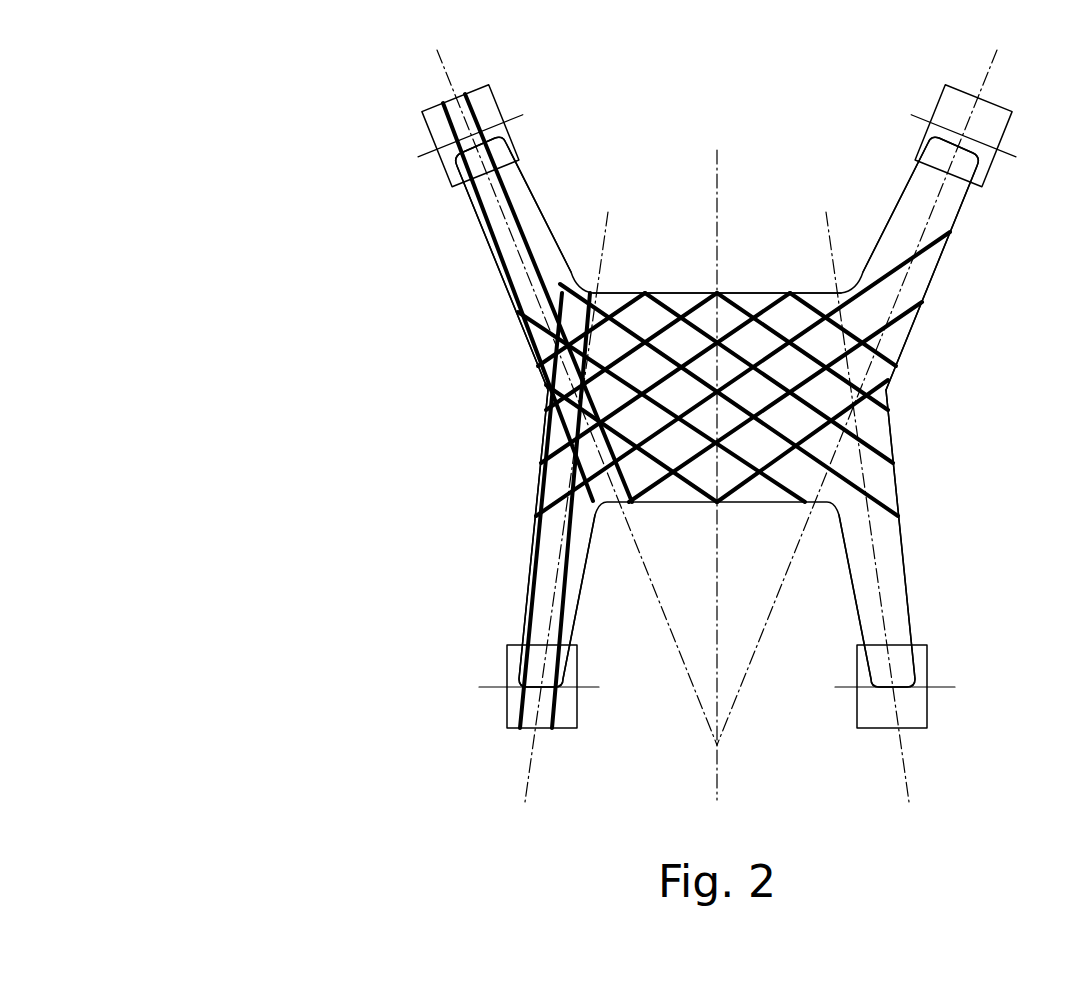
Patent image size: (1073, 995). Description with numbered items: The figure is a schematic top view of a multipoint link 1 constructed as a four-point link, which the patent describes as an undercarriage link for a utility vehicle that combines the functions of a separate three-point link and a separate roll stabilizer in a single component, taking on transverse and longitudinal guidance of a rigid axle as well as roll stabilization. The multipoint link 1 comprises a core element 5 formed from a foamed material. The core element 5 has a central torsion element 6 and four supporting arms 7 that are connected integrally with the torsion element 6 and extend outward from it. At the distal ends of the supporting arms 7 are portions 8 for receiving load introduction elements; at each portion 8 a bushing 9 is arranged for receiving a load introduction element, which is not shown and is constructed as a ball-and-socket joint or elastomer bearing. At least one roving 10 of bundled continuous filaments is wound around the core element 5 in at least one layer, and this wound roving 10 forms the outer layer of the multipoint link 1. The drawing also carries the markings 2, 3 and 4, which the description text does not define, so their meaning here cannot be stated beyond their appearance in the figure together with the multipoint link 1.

The multipoint link 1 is at (296, 449).
The node element 2 is at (536, 413).
The central axis 3 is at (731, 312).
The arm longitudinal axis 4 is at (437, 95).
The core element 5 is at (885, 374).
The torsion element 6 is at (775, 284).
The supporting arms 7 is at (502, 243).
The portions for receiving load introduction elements 8 is at (467, 200).
The bushing 9 is at (488, 106).
The roving 10 is at (658, 293).